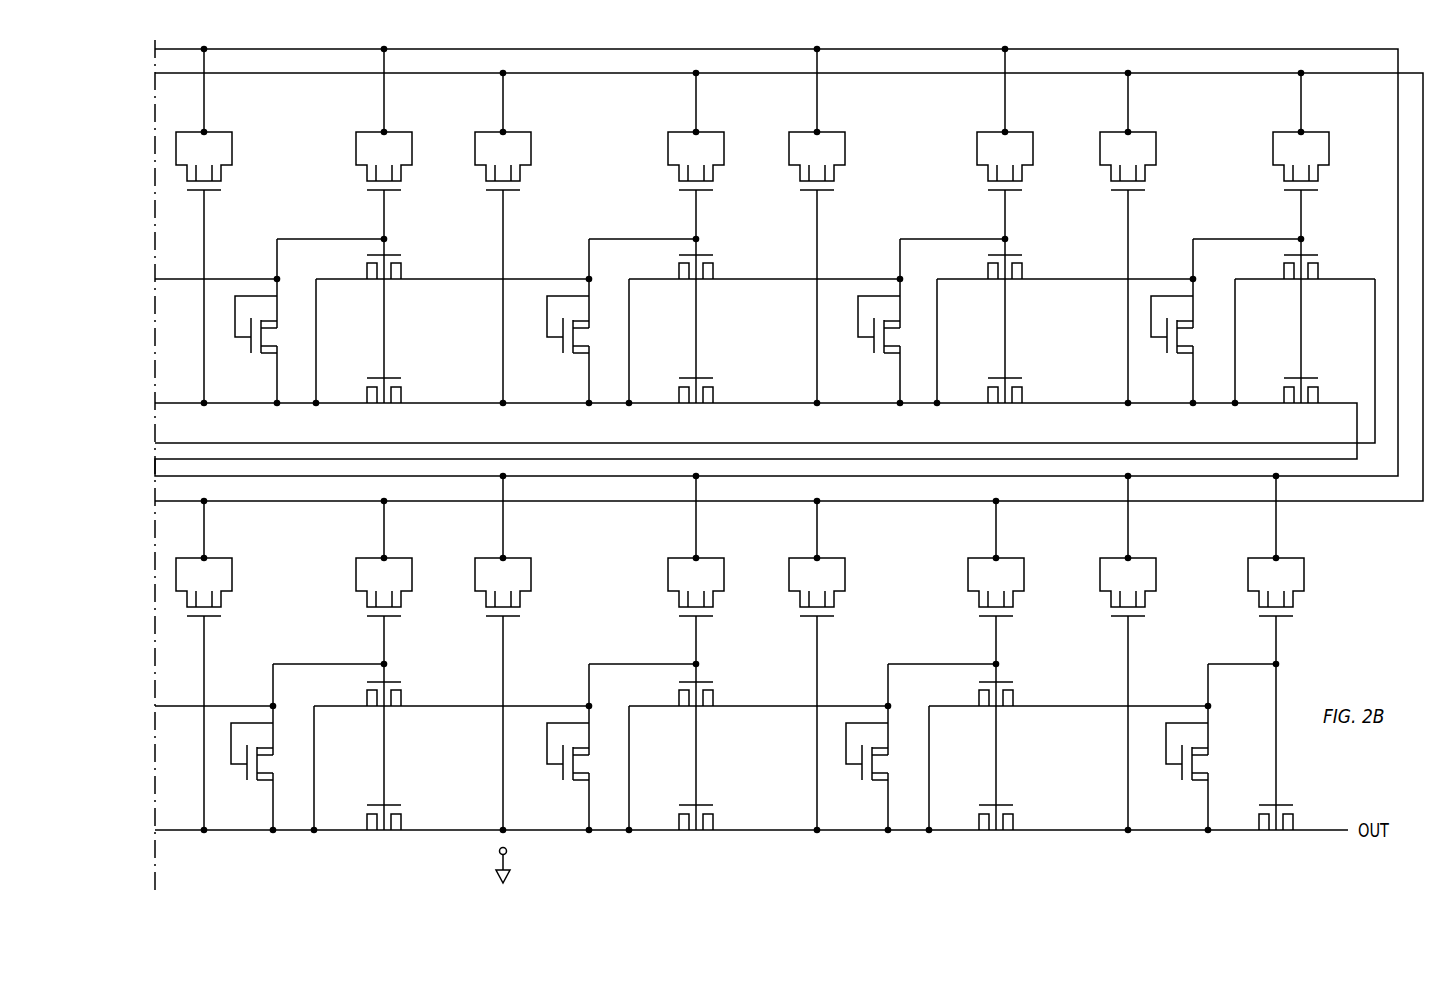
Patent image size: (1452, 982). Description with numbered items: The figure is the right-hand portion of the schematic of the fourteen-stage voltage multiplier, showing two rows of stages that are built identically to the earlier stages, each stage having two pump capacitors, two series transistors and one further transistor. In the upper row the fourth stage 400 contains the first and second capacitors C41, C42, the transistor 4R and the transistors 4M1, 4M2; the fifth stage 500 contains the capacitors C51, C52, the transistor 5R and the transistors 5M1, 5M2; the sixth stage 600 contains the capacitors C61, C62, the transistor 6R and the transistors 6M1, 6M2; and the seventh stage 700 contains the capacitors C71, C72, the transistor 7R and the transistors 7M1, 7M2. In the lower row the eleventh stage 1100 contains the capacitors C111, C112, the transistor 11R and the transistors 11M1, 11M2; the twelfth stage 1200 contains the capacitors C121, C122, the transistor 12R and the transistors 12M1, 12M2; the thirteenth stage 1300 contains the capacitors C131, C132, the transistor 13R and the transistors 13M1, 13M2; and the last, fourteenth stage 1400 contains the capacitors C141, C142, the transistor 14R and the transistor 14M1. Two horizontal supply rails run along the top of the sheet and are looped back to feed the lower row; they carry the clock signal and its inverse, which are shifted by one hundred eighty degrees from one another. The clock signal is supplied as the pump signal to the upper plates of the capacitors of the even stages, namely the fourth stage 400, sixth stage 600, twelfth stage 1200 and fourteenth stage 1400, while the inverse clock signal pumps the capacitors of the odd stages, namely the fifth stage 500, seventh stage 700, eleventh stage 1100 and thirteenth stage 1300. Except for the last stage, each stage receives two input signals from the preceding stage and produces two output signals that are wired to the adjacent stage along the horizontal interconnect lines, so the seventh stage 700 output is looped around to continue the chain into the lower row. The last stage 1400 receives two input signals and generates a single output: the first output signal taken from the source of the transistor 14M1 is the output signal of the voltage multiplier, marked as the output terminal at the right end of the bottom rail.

The first capacitor of fourth stage C41 is at (222, 226).
The second capacitor of fourth stage C42 is at (402, 142).
The first capacitor of fifth stage C51 is at (521, 238).
The second capacitor of fifth stage C52 is at (714, 154).
The first capacitor of sixth stage C61 is at (835, 226).
The second capacitor of sixth stage C62 is at (1023, 142).
The first capacitor of seventh stage C71 is at (1146, 238).
The second capacitor of seventh stage C72 is at (1319, 154).
The first capacitor of eleventh stage C111 is at (226, 666).
The second capacitor of eleventh stage C112 is at (406, 581).
The first capacitor of twelfth stage C121 is at (525, 651).
The second capacitor of twelfth stage C122 is at (718, 568).
The first capacitor of thirteenth stage C131 is at (839, 666).
The second capacitor of thirteenth stage C132 is at (1018, 581).
The first capacitor of fourteenth stage C141 is at (1150, 653).
The second capacitor of fourteenth stage C142 is at (1298, 568).
The fourth stage 400 is at (331, 248).
The fifth stage 500 is at (643, 248).
The sixth stage 600 is at (953, 248).
The seventh stage 700 is at (1247, 248).
The eleventh stage 1100 is at (329, 674).
The twelfth stage 1200 is at (643, 674).
The thirteenth stage 1300 is at (942, 674).
The fourteenth stage 1400 is at (1241, 674).
The transistor of fourth stage 4R is at (267, 342).
The transistor of fifth stage 5R is at (579, 342).
The transistor of sixth stage 6R is at (890, 342).
The transistor of seventh stage 7R is at (1183, 342).
The transistor of eleventh stage 11R is at (268, 769).
The transistor of twelfth stage 12R is at (584, 769).
The transistor of thirteenth stage 13R is at (883, 769).
The transistor of fourteenth stage 14R is at (1203, 769).
The first transistor of fourth stage 4M1 is at (370, 355).
The second transistor of fourth stage 4M2 is at (451, 322).
The first transistor of fifth stage 5M1 is at (682, 355).
The second transistor of fifth stage 5M2 is at (763, 322).
The first transistor of sixth stage 6M1 is at (991, 355).
The second transistor of sixth stage 6M2 is at (1063, 322).
The first transistor of seventh stage 7M1 is at (1287, 355).
The second transistor of seventh stage 7M2 is at (1303, 322).
The first transistor of eleventh stage 11M1 is at (368, 783).
The second transistor of eleventh stage 11M2 is at (450, 748).
The first transistor of twelfth stage 12M1 is at (680, 783).
The second transistor of twelfth stage 12M2 is at (757, 748).
The first transistor of thirteenth stage 13M1 is at (982, 783).
The second transistor of thirteenth stage 13M2 is at (1067, 748).
The first transistor of fourteenth stage 14M1 is at (1266, 762).